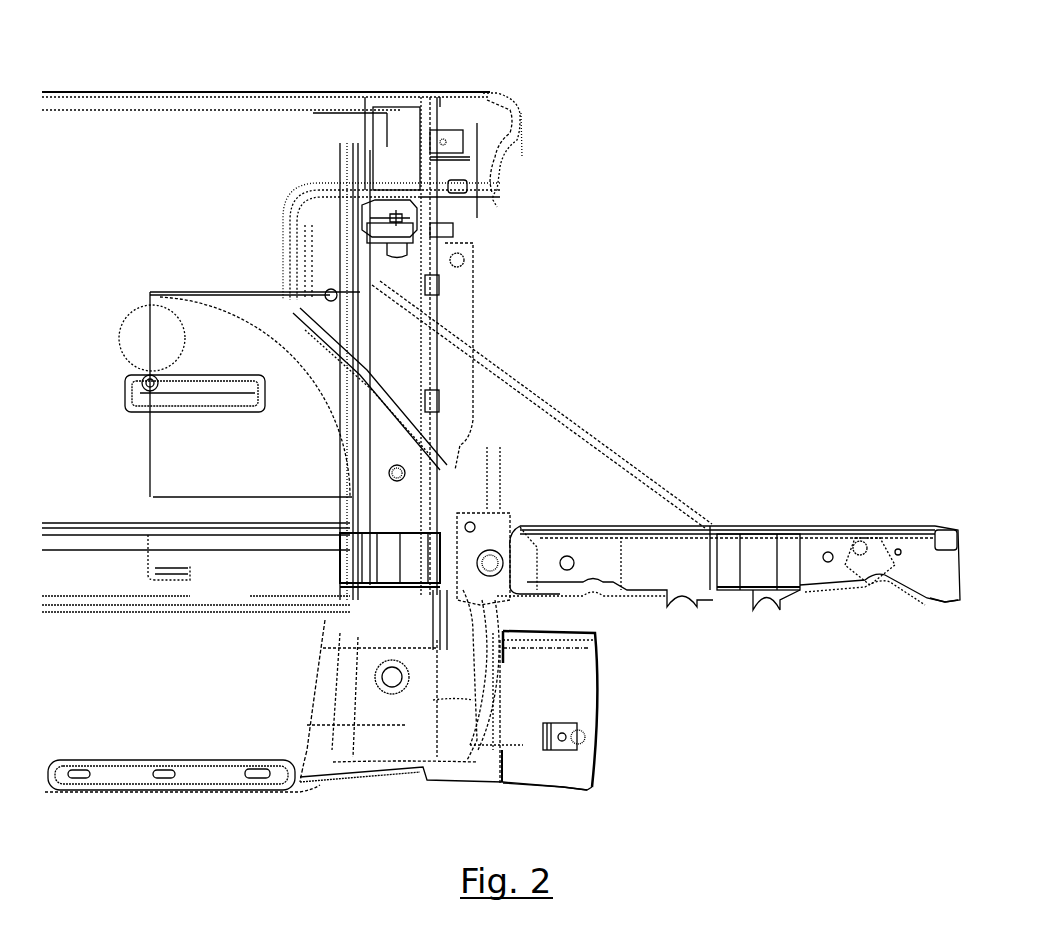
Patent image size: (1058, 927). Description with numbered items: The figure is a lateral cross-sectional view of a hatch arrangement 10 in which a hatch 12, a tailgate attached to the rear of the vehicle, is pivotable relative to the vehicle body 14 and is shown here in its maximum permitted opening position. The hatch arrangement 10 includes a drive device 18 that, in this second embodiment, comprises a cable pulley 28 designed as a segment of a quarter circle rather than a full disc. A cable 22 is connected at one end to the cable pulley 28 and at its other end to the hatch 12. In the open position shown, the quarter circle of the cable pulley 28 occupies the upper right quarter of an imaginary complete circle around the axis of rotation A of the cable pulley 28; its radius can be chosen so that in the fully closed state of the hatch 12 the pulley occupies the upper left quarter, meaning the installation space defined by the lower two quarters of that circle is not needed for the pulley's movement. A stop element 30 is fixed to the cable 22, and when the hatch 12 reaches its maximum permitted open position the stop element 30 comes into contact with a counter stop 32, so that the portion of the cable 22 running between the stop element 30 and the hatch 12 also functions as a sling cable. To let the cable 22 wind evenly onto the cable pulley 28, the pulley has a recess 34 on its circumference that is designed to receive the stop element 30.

The hatch arrangement 10 is at (628, 76).
The hatch 12 is at (767, 555).
The vehicle body 14 is at (205, 172).
The drive device 18 is at (265, 508).
The cable 22 is at (565, 425).
The cable pulley 28 is at (190, 440).
The stop element 30 is at (328, 288).
The counter stop 32 is at (340, 280).
The recess 34 is at (305, 365).
The axis of rotation A is at (155, 493).